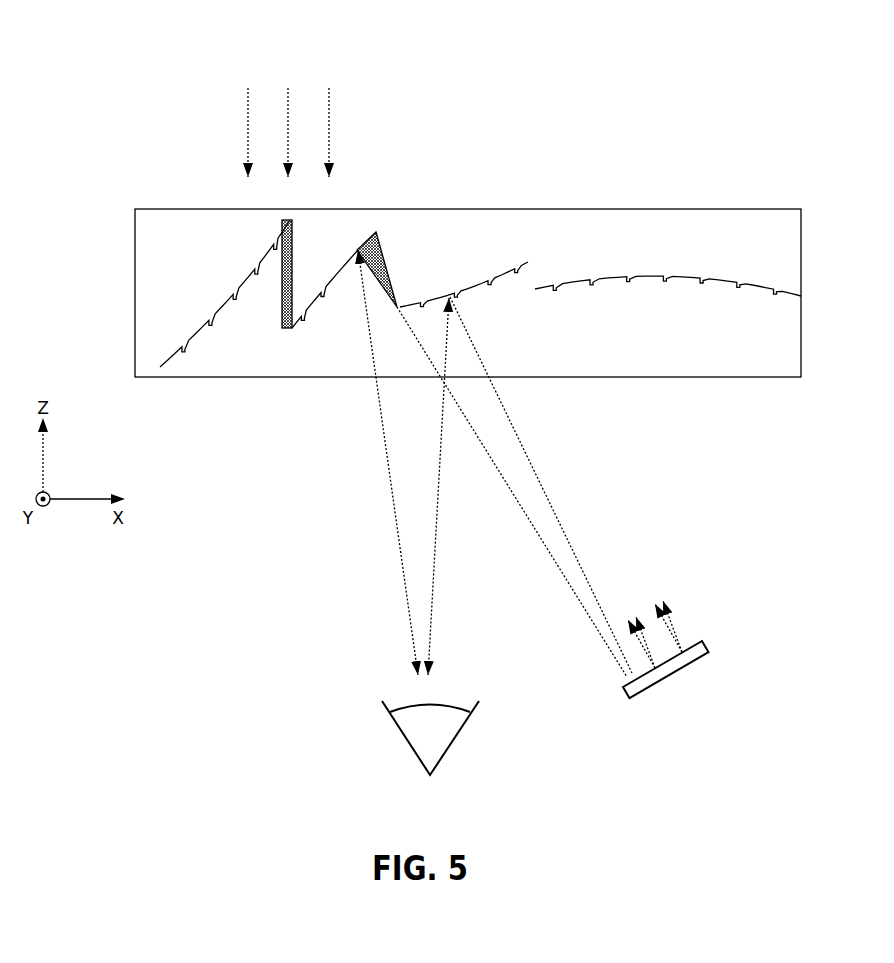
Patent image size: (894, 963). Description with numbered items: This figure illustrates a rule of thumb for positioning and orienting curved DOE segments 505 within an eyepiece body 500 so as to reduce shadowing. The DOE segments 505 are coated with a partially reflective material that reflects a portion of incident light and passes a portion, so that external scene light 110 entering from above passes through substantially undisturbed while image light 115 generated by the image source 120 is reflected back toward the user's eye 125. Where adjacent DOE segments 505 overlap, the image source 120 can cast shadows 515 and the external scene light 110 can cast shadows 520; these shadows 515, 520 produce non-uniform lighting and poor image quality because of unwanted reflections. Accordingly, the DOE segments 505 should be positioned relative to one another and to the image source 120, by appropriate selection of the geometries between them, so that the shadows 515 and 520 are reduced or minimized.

The eyepiece body 500 is at (803, 240).
The DOE segments 505 is at (191, 262).
The shadows cast by image source 515 is at (381, 252).
The shadows cast by external scene light 520 is at (294, 252).
The external scene light 110 is at (329, 115).
The image light 115 is at (537, 476).
The image source 120 is at (710, 647).
The eye 125 is at (430, 738).